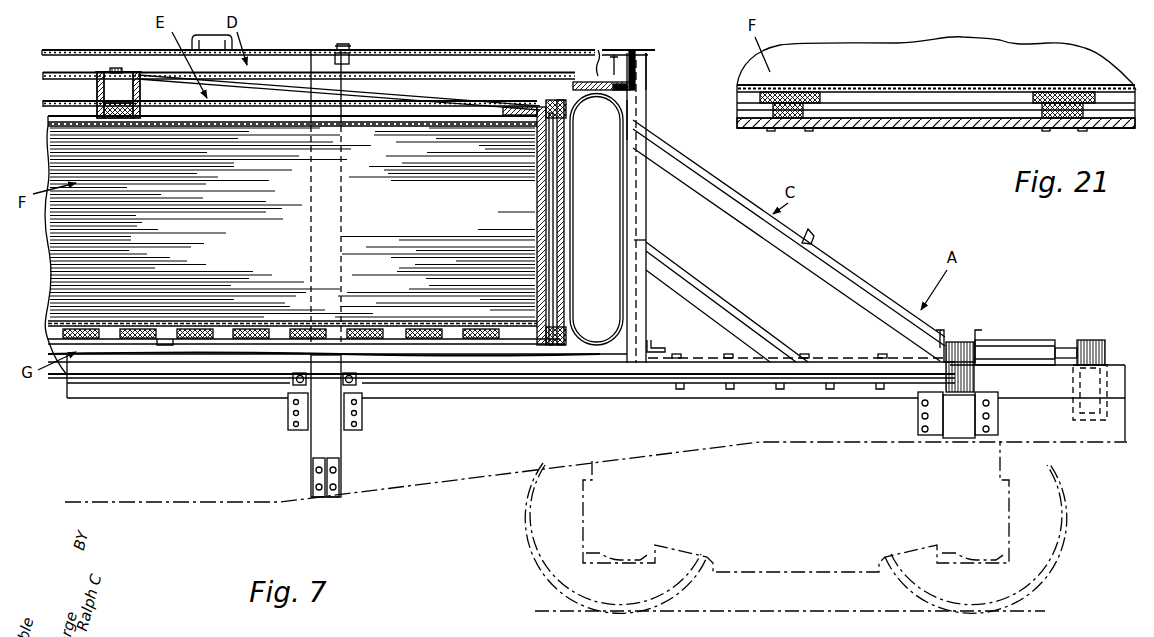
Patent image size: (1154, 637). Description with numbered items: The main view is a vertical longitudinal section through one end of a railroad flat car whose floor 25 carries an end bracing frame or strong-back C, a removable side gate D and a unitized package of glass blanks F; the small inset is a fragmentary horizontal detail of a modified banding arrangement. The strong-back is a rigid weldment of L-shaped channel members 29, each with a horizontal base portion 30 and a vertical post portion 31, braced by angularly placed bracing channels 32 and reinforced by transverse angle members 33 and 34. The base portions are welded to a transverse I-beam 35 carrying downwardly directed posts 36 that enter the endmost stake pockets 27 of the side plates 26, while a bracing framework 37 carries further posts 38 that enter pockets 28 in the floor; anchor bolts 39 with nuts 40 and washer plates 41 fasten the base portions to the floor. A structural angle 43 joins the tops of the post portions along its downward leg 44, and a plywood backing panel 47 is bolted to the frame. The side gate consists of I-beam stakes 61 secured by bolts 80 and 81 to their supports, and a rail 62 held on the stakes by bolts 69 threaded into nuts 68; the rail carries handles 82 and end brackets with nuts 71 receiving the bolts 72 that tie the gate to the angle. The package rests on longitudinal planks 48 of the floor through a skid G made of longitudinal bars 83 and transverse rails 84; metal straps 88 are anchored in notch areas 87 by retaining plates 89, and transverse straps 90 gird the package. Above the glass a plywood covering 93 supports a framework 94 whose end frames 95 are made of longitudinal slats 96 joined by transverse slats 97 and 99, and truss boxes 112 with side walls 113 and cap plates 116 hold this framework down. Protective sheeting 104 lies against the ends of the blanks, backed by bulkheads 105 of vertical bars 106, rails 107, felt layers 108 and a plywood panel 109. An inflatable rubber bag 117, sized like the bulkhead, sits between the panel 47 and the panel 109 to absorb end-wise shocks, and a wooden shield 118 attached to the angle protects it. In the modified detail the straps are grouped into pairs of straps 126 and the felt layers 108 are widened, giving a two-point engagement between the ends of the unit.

In FIG. 7, the structural angle or rail 62 is at (263, 62).
In FIG. 7, the longitudinal wood slats 96 is at (292, 117).
In FIG. 7, the metal strap 88 is at (52, 104).
In FIG. 7, the cap plates 116 is at (111, 72).
In FIG. 7, the truss boxes 112 is at (115, 90).
In FIG. 7, the side walls 113 is at (140, 90).
In FIG. 7, the transverse slats 99 is at (132, 112).
In FIG. 7, the banding straps 90 is at (120, 71).
In FIG. 7, the handles 82 is at (205, 35).
In FIG. 7, the bolts 69 is at (347, 44).
In FIG. 7, the nut 68 is at (350, 62).
In FIG. 7, the stakes 61 is at (312, 50).
In FIG. 7, the bolts 81 is at (306, 381).
In FIG. 7, the bolts 80 is at (313, 486).
In FIG. 7, the framework 94 is at (416, 100).
In FIG. 7, the end frame 95 is at (455, 110).
In FIG. 7, the transverse slats 97 is at (518, 104).
In FIG. 7, the bulkheads 105 is at (558, 100).
In FIG. 21, the bulkheads 105 is at (888, 106).
In FIG. 7, the protective board material 93 is at (480, 122).
In FIG. 7, the protective sheeting 104 is at (546, 170).
In FIG. 21, the protective sheeting 104 is at (977, 88).
In FIG. 7, the felt layer 108 is at (553, 207).
In FIG. 21, the felt layer 108 is at (810, 103).
In FIG. 7, the vertical bars 106 is at (564, 246).
In FIG. 7, the plywood panel 109 is at (568, 280).
In FIG. 7, the horizontal rails 107 is at (566, 127).
In FIG. 7, the hood or shield 118 is at (631, 87).
In FIG. 7, the bolts 72 is at (633, 55).
In FIG. 7, the nut 71 is at (617, 50).
In FIG. 7, the structural angle 43 is at (650, 52).
In FIG. 7, the downwardly directed leg 44 is at (648, 76).
In FIG. 7, the backing plate or panel 47 is at (628, 122).
In FIG. 7, the L-shaped channel members 29 is at (640, 219).
In FIG. 7, the post portions 31 is at (648, 243).
In FIG. 7, the bracing channels 32 is at (700, 309).
In FIG. 7, the angle member 34 is at (815, 244).
In FIG. 7, the angle member 33 is at (652, 344).
In FIG. 7, the base portions 30 is at (812, 357).
In FIG. 7, the anchor bolts 39 is at (688, 356).
In FIG. 7, the I-beam 35 is at (948, 330).
In FIG. 7, the posts 36 is at (984, 342).
In FIG. 7, the bracing framework 37 is at (1037, 347).
In FIG. 7, the posts 38 is at (1090, 340).
In FIG. 7, the pockets 28 is at (1103, 422).
In FIG. 7, the stake pockets 27 is at (946, 416).
In FIG. 7, the floor 25 is at (434, 372).
In FIG. 7, the longitudinal planks 48 is at (518, 354).
In FIG. 7, the side plates or panels 26 is at (425, 427).
In FIG. 7, the washer plates 41 is at (663, 380).
In FIG. 7, the nuts 40 is at (680, 393).
In FIG. 7, the inflatable rubber bags 117 is at (610, 348).
In FIG. 7, the transverse rails 84 is at (135, 339).
In FIG. 7, the notch areas 87 is at (158, 347).
In FIG. 7, the retaining plate 89 is at (166, 344).
In FIG. 7, the longitudinal bars 83 is at (226, 344).
In FIG. 21, the pairs of straps 126 is at (772, 132).